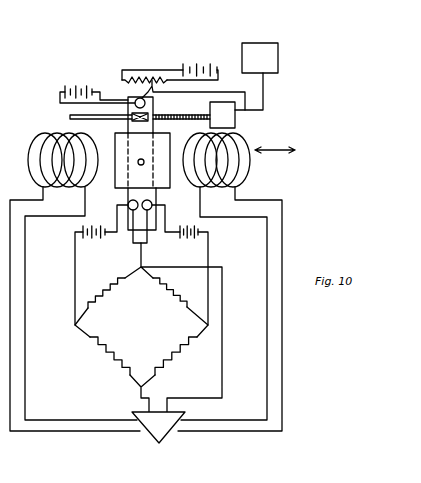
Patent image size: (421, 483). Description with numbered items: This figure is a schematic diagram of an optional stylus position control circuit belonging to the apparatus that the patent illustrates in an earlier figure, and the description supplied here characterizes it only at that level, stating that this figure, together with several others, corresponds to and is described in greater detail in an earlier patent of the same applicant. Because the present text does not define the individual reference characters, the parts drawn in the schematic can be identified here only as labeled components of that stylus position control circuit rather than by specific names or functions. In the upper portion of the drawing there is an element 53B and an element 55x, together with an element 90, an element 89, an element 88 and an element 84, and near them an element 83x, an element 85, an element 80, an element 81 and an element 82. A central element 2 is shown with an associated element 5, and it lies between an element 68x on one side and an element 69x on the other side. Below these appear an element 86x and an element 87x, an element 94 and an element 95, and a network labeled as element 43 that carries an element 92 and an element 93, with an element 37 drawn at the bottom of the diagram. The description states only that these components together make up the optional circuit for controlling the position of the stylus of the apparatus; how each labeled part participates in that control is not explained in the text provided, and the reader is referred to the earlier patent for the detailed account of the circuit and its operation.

The amplifier unit 53B is at (243, 52).
The control unit 55x is at (242, 44).
The battery 90 is at (170, 64).
The potentiometer resistor 89 is at (151, 86).
The wiper lever 88 is at (187, 95).
The battery 84 is at (97, 89).
The pivot 83x is at (145, 103).
The housing 85 is at (140, 116).
The actuator block 80 is at (128, 128).
The rack rod 81 is at (161, 118).
The servo 82 is at (228, 100).
The rotor housing 2 is at (147, 160).
The axis of displacement 5 is at (216, 158).
The left coil 68x is at (75, 282).
The right coil 69x is at (233, 282).
The left sensing cell 86x is at (123, 227).
The right sensing cell 87x is at (166, 217).
The battery 94 is at (90, 267).
The battery 95 is at (192, 267).
The bridge circuit 43 is at (148, 339).
The upper bridge resistors 92 is at (137, 293).
The lower bridge resistors 93 is at (143, 357).
The amplifier 37 is at (158, 427).